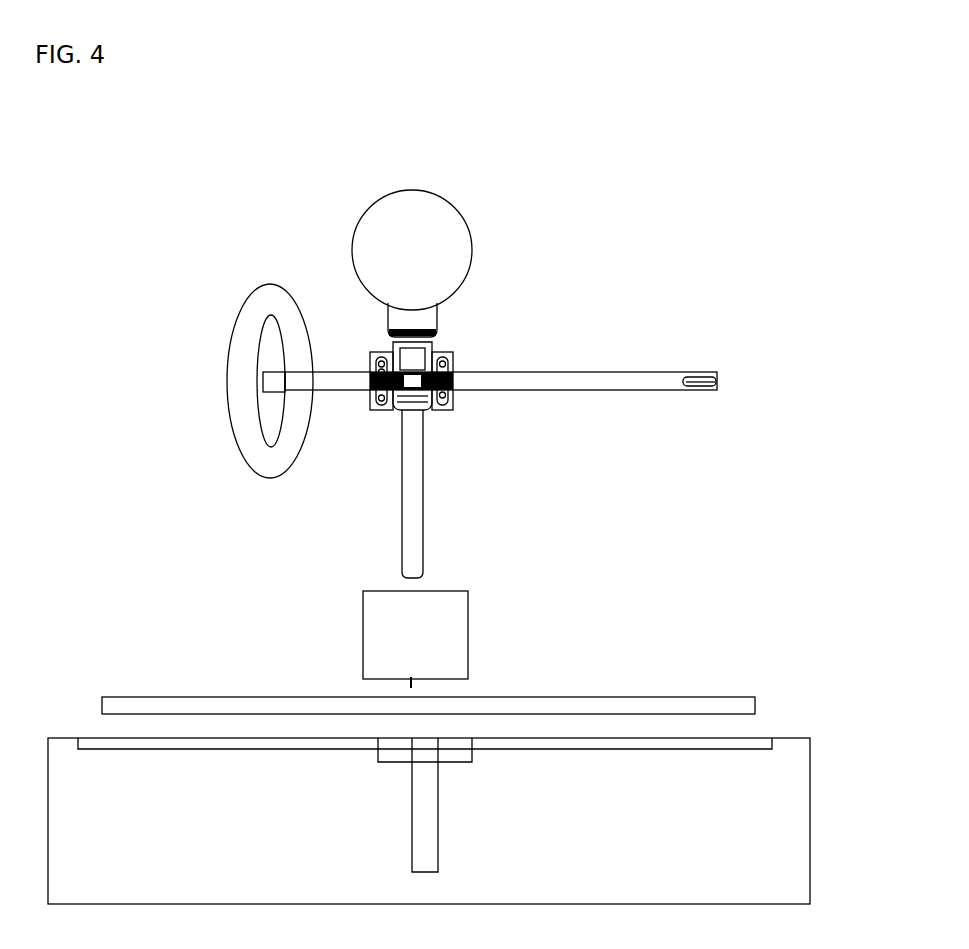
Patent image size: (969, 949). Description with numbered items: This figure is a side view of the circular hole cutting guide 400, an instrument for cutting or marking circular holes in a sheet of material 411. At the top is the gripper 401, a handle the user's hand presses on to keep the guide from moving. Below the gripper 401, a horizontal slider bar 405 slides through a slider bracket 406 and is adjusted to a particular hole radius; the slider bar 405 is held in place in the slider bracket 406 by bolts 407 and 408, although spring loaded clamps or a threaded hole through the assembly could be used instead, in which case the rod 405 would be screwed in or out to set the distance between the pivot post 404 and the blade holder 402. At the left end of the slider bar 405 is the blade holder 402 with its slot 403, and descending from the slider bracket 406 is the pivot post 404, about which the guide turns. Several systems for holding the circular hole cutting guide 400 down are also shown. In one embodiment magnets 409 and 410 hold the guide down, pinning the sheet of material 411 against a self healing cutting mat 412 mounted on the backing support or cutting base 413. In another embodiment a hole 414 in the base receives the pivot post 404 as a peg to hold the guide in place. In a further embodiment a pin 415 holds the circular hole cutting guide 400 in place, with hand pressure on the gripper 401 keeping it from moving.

The circular hole cutting guide 400 is at (514, 184).
The gripper 401 is at (372, 213).
The blade holder 402 is at (267, 305).
The slot 403 is at (272, 422).
The pivot post 404 is at (414, 520).
The slider bar 405 is at (607, 388).
The slider bracket 406 is at (434, 410).
The bolt 407 is at (452, 400).
The bolt 408 is at (381, 352).
The magnet 409 is at (451, 629).
The magnet 410 is at (457, 753).
The sheet of material 411 is at (230, 694).
The self healing cutting mat 412 is at (290, 747).
The cutting base 413 is at (787, 762).
The hole 414 is at (432, 863).
The pin 415 is at (418, 684).